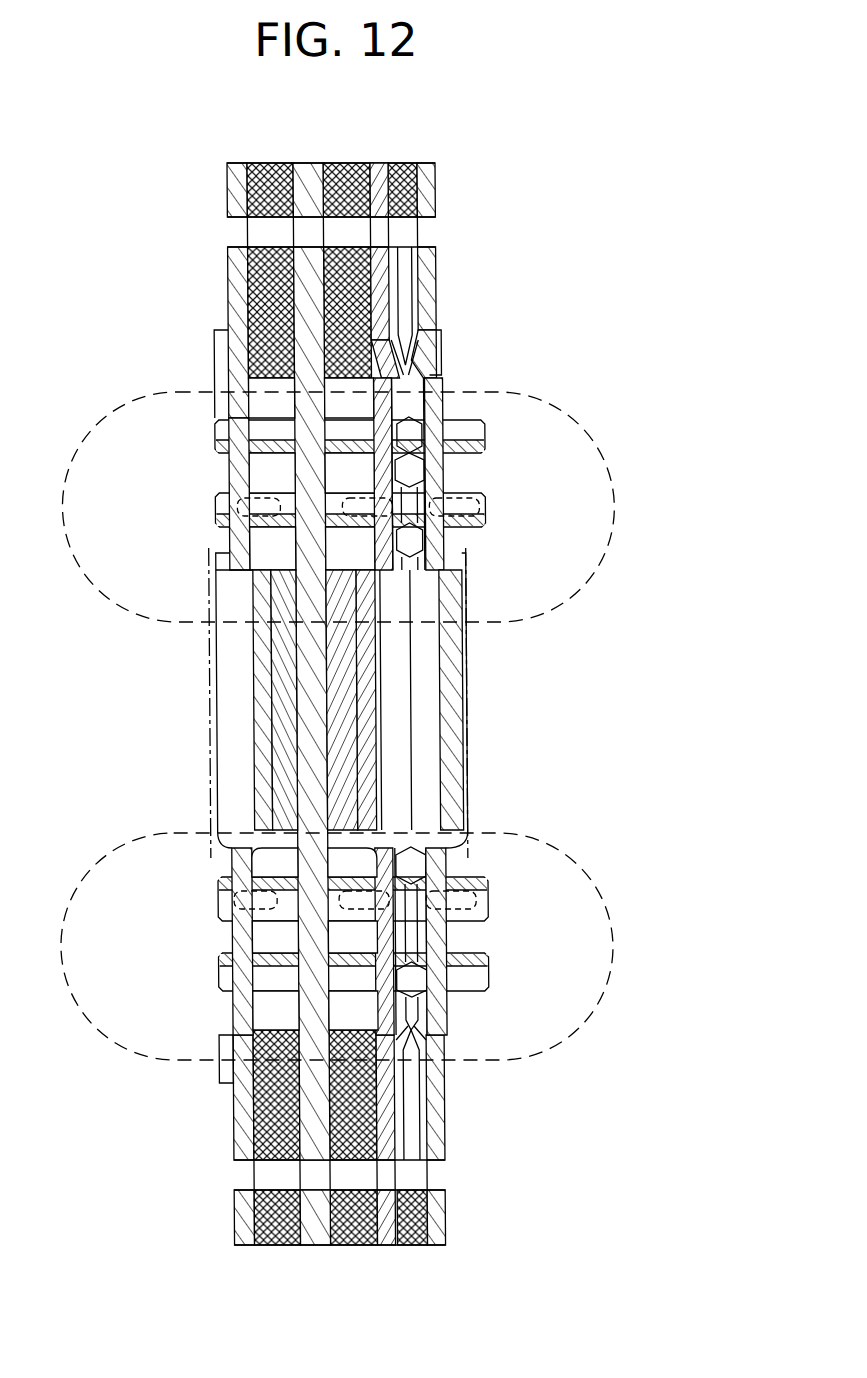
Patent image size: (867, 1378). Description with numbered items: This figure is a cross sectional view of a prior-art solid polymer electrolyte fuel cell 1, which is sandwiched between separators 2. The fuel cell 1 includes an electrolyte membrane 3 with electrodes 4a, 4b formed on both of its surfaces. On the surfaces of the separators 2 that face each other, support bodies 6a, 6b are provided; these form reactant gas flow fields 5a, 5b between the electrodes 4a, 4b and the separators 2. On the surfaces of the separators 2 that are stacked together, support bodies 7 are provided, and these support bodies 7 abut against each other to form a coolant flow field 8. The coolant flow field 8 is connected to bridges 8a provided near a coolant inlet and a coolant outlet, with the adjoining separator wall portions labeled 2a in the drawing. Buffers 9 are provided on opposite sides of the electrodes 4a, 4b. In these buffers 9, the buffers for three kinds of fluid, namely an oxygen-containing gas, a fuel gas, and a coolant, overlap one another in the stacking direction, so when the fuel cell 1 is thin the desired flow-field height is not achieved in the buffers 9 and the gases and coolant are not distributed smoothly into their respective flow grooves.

The fuel cell 1 is at (310, 160).
The separator 2 is at (228, 163).
The channel wall 2a is at (383, 262).
The electrolyte membrane 3 is at (312, 772).
The electrode 4a is at (281, 660).
The electrode 4b is at (337, 604).
The reactant gas flow field 5a is at (257, 475).
The reactant gas flow field 5b is at (350, 552).
The support body 6a is at (290, 930).
The support body 6b is at (350, 932).
The support body 7 is at (275, 512).
The coolant flow field 8 is at (407, 545).
The bridge 8a is at (405, 283).
The buffer 9 is at (175, 392).